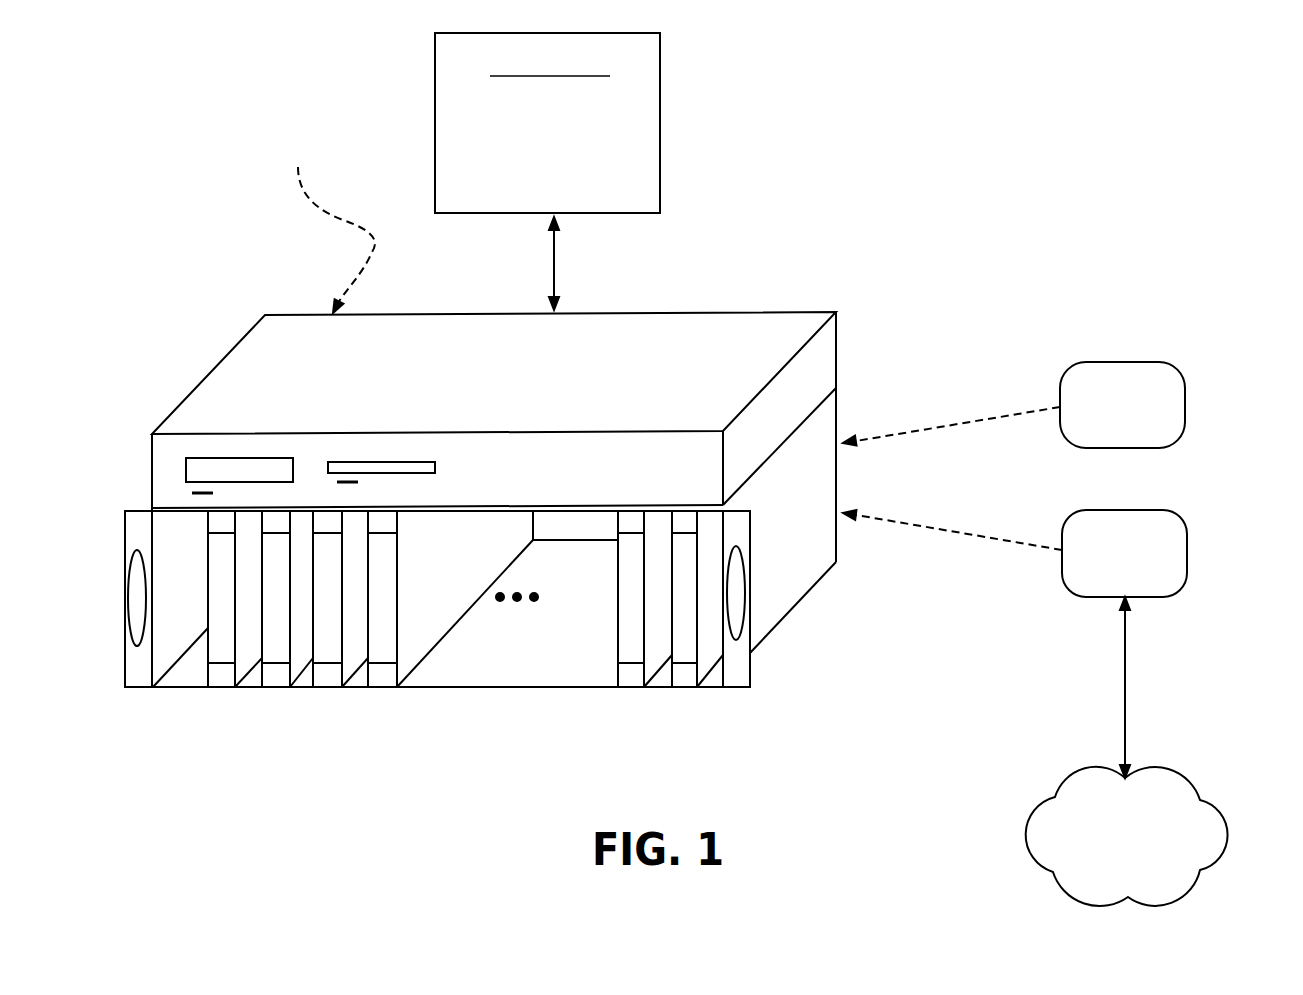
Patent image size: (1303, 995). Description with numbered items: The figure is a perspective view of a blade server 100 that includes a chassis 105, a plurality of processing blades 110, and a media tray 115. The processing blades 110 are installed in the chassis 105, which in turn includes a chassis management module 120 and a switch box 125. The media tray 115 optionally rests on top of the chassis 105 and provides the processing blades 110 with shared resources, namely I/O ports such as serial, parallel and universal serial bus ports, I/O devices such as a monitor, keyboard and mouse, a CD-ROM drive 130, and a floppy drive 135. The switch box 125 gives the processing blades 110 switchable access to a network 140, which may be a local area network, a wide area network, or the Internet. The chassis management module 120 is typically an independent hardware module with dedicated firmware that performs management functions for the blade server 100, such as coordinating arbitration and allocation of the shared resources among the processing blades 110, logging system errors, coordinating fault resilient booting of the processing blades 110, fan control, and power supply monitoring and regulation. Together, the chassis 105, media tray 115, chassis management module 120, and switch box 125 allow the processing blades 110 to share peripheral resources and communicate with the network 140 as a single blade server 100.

The blade server 100 is at (954, 110).
The chassis 105 is at (790, 593).
The processing blades 110 is at (223, 678).
The media tray 115 is at (825, 345).
The chassis management module (CMM) 120 is at (1148, 362).
The switch box 125 is at (1148, 510).
The CD-ROM drive 130 is at (187, 465).
The floppy drive 135 is at (353, 472).
The network 140 is at (1167, 768).